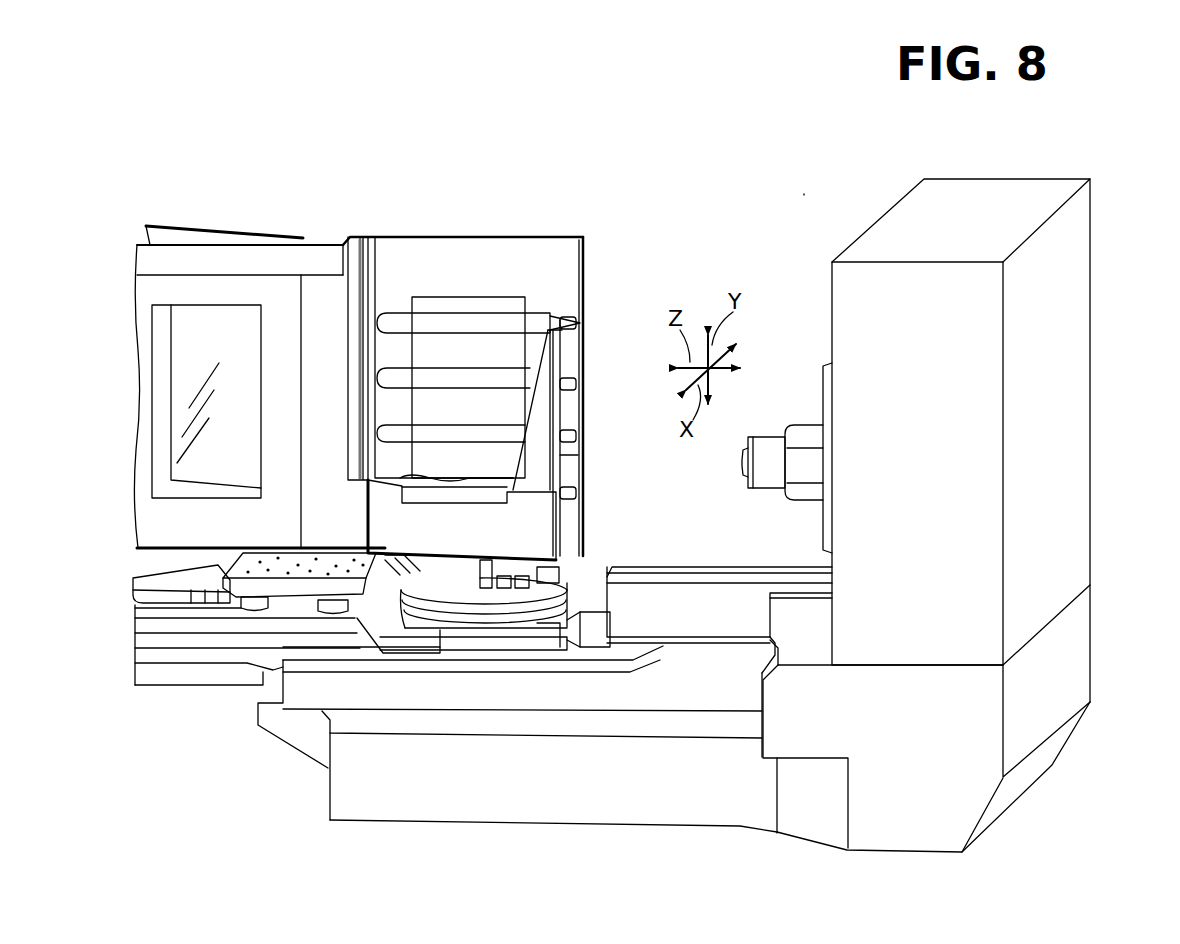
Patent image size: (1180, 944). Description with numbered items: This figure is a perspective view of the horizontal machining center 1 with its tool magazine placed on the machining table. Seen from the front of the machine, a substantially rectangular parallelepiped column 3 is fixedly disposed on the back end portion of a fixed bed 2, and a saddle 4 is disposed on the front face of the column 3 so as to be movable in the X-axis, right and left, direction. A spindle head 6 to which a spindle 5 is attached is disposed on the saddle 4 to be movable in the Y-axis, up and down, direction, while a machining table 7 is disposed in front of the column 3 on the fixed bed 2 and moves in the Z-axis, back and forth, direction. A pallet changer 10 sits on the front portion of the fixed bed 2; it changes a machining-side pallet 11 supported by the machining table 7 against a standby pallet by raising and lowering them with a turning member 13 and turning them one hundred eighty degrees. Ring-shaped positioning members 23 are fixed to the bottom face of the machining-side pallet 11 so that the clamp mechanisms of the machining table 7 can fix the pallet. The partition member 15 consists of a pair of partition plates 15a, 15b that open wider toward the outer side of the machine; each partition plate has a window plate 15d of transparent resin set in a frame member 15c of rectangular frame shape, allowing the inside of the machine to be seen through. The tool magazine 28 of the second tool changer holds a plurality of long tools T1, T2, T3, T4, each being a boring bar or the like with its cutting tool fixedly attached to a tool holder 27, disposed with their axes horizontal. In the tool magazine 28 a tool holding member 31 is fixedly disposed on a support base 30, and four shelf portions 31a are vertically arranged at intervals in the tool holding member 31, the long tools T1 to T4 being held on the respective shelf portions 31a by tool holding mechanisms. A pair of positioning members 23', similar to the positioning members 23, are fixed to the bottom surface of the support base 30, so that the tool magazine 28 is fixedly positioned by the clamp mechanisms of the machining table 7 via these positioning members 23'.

The horizontal machining center 1 is at (804, 193).
The fixed bed 2 is at (1092, 643).
The column 3 is at (1092, 436).
The saddle 4 is at (818, 370).
The spindle 5 is at (743, 448).
The spindle head 6 is at (803, 421).
The machining table 7 is at (569, 588).
The pallet changer 10 is at (171, 568).
The machining-side pallet 11 is at (295, 594).
The turning member 13 is at (401, 565).
The partition member 15 is at (568, 226).
The partition plate 15a is at (223, 230).
The partition plate 15b is at (165, 242).
The frame member 15c is at (278, 288).
The window plate 15d is at (243, 317).
The positioning member 23 is at (259, 692).
The positioning member 23' is at (507, 596).
The tool holder 27 is at (565, 322).
The tool magazine 28 is at (580, 452).
The support base 30 is at (574, 550).
The tool holding member 31 is at (565, 478).
The shelf portion 31a is at (563, 353).
The long tool T1 is at (535, 318).
The long tool T2 is at (448, 368).
The long tool T3 is at (438, 425).
The long tool T4 is at (433, 478).